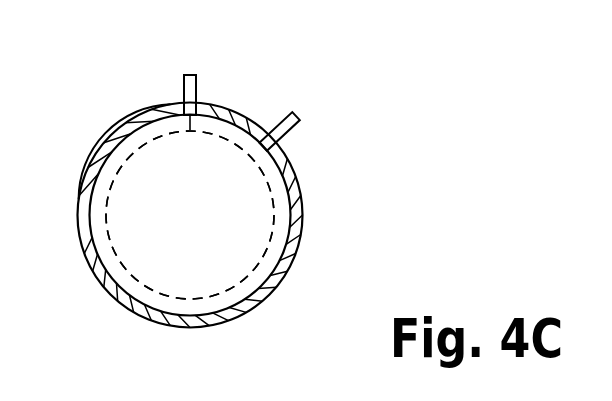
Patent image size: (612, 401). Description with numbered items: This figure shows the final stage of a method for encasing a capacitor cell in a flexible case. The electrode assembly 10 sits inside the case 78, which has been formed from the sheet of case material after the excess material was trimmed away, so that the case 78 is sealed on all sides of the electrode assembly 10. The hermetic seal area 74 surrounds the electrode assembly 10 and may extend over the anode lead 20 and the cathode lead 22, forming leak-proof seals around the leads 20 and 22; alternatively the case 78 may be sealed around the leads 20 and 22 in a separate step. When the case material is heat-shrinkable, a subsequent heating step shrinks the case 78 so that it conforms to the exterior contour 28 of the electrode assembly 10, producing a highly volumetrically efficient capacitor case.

The electrode assembly 10 is at (172, 270).
The anode lead 20 is at (197, 87).
The cathode lead 22 is at (278, 125).
The exterior contour 28 is at (266, 248).
The seal area 74 is at (238, 307).
The case 78 is at (70, 111).